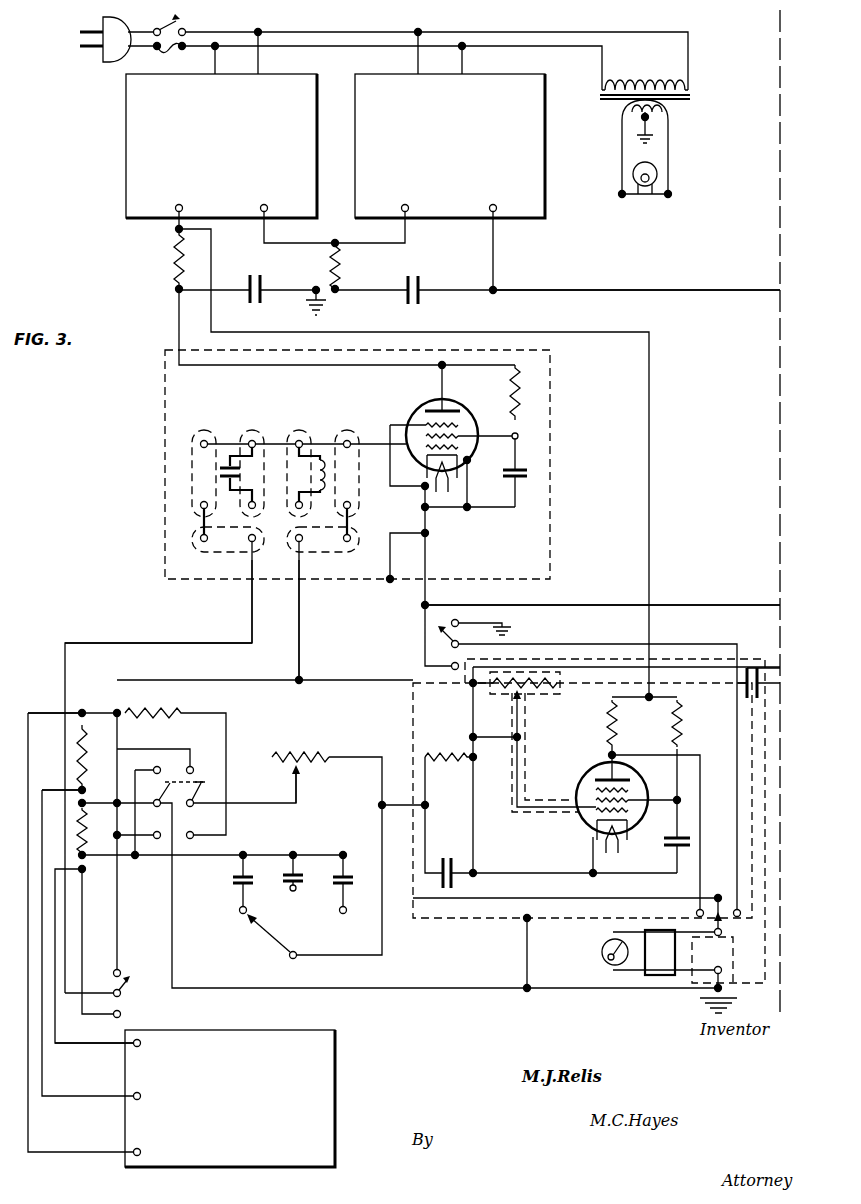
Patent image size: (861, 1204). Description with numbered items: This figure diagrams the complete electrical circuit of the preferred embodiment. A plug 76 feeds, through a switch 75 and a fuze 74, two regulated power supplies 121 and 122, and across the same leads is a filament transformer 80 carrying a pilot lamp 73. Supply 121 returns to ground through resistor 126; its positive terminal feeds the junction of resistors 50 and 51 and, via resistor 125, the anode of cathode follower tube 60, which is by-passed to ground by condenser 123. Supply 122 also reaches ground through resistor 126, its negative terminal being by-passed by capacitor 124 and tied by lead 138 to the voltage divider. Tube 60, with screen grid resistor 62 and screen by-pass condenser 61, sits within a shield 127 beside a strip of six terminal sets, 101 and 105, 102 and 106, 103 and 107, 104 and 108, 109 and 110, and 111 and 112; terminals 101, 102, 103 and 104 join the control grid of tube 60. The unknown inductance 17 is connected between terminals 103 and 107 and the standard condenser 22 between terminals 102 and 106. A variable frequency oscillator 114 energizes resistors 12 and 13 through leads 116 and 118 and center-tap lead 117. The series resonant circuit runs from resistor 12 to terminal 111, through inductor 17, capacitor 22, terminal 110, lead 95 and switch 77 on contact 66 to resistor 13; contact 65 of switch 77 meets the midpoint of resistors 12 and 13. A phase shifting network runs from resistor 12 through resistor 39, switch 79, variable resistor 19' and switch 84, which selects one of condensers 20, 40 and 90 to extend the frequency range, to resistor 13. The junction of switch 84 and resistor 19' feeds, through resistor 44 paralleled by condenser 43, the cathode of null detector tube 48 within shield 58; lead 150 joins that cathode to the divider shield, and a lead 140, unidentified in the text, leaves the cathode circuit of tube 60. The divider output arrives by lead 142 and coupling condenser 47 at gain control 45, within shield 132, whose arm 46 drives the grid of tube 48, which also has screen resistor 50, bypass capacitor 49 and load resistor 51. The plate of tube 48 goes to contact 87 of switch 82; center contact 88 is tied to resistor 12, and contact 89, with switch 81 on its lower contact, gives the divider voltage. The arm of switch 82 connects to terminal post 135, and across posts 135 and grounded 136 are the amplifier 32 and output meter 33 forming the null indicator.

The plug 76 is at (92, 28).
The switch 75 is at (181, 18).
The fuze 74 is at (165, 52).
The regulated power supply 121 is at (221, 146).
The regulated power supply 122 is at (450, 146).
The filament transformer 80 is at (690, 97).
The pilot lamp 73 is at (658, 173).
The resistor 125 is at (175, 272).
The condenser 123 is at (252, 276).
The resistor 126 is at (341, 276).
The capacitor 124 is at (420, 278).
The lead 138 is at (742, 290).
The shield 127 is at (165, 398).
The terminal 101 is at (207, 438).
The terminal 102 is at (256, 438).
The terminal 103 is at (303, 438).
The terminal 104 is at (351, 438).
The terminal 105 is at (200, 506).
The terminal 108 is at (350, 508).
The condenser 22 is at (237, 486).
The inductance 17 is at (314, 486).
The terminal 109 is at (204, 543).
The terminal 110 is at (252, 543).
The terminal post 111 is at (299, 543).
The terminal 112 is at (347, 543).
The terminal post 106 is at (254, 543).
The terminal post 107 is at (297, 543).
The cathode follower tube 60 is at (423, 398).
The screen grid resistor 62 is at (510, 400).
The screen by-pass condenser 61 is at (529, 470).
The conductor 140 is at (764, 605).
The switch 81 is at (438, 632).
The lead 150 is at (768, 660).
The lead 95 is at (124, 643).
The lead 116 is at (46, 713).
The resistor 39 is at (176, 710).
The variable resistor 19' is at (300, 755).
The resistor 12 is at (87, 758).
The lead 117 is at (56, 780).
The resistor 13 is at (87, 845).
The switch 79 is at (182, 790).
The condenser 20 is at (233, 879).
The condenser 40 is at (283, 877).
The condenser 90 is at (353, 880).
The switch 84 is at (272, 940).
The contact 65 is at (119, 970).
The switch 77 is at (122, 991).
The lower contact 66 is at (121, 1012).
The lead 118 is at (64, 1045).
The variable frequency oscillator 114 is at (230, 1098).
The shield 58 is at (454, 918).
The resistor 44 is at (456, 746).
The by-pass condenser 43 is at (441, 858).
The potentiometer 45 is at (562, 688).
The shield 132 is at (534, 695).
The arm 46 is at (520, 738).
The load resistor 51 is at (618, 728).
The resistor 50 is at (682, 736).
The electron discharge tube 48 is at (578, 790).
The bypass capacitor 49 is at (665, 846).
The switch 82 is at (730, 858).
The center contact 88 is at (718, 896).
The contact 89 is at (739, 910).
The terminal 87 is at (696, 913).
The terminal post 135 is at (722, 932).
The terminal post 136 is at (721, 968).
The coupling condenser 47 is at (750, 699).
The lead 142 is at (768, 685).
The output meter 33 is at (602, 955).
The amplifier 32 is at (660, 952).